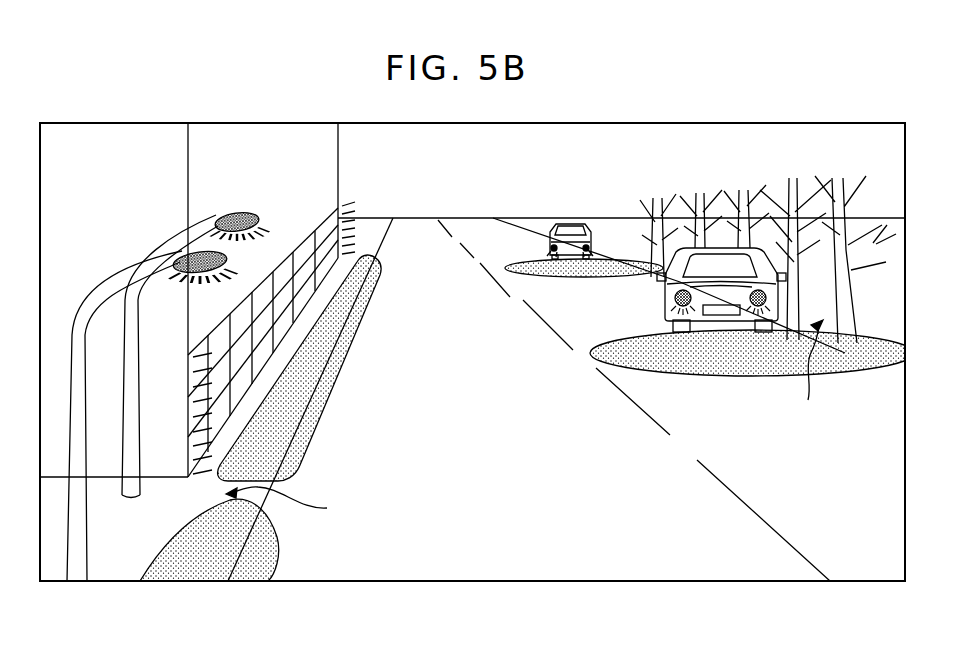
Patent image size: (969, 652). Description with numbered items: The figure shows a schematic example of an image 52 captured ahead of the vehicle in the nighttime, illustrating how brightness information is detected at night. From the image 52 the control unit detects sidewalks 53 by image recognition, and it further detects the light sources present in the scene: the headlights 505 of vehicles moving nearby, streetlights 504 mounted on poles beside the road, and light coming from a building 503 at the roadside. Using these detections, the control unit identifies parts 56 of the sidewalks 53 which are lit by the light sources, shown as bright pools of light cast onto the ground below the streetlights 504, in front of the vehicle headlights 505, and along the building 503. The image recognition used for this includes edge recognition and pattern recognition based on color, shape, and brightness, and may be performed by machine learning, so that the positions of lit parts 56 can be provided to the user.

The image 52 is at (770, 96).
The sidewalks 53 is at (524, 421).
The parts of the sidewalks lit by the light sources 56 is at (528, 265).
The building 503 is at (338, 163).
The streetlights 504 is at (187, 247).
The headlights 505 is at (592, 237).